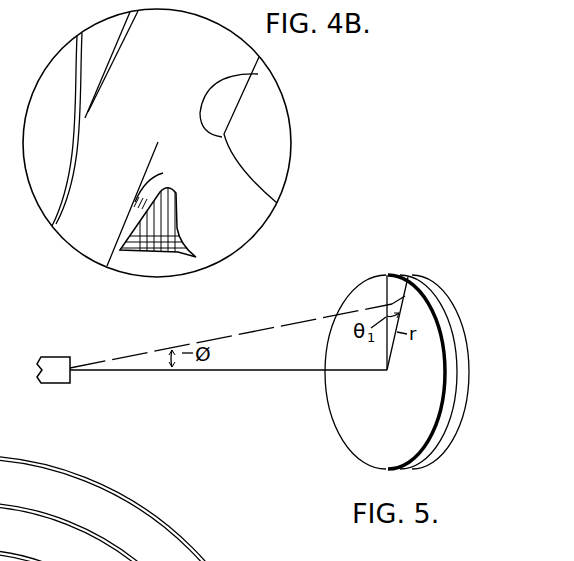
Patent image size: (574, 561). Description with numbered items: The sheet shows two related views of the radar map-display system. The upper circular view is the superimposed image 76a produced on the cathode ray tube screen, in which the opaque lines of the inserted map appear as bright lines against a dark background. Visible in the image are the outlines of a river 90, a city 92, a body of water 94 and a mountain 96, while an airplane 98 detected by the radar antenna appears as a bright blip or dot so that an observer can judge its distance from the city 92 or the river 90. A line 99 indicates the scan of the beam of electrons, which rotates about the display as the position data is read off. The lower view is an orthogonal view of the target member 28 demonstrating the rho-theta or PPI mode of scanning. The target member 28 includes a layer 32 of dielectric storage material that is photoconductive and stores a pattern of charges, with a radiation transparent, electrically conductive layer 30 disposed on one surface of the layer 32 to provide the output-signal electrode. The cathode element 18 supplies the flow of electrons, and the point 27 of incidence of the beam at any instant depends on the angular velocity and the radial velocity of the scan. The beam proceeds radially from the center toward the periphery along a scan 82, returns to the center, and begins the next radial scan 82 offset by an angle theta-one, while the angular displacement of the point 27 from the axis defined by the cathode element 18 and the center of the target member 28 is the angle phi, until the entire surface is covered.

In FIG. 4B, the superimposed image 76a is at (257, 233).
In FIG. 4B, the river 90 is at (92, 113).
In FIG. 4B, the city 92 is at (238, 95).
In FIG. 4B, the body of water 94 is at (275, 134).
In FIG. 4B, the mountain 96 is at (175, 205).
In FIG. 4B, the airplane 98 is at (162, 180).
In FIG. 4B, the line indicating electron beam scan 99 is at (143, 168).
In FIG. 5, the cathode element 18 is at (71, 383).
In FIG. 5, the target member 28 is at (319, 309).
In FIG. 5, the point of incidence 27 is at (405, 296).
In FIG. 5, the electron beam scan 82 is at (391, 347).
In FIG. 5, the layer of dielectric storage material 32 is at (356, 448).
In FIG. 5, the radiation transparent layer 30 is at (439, 454).